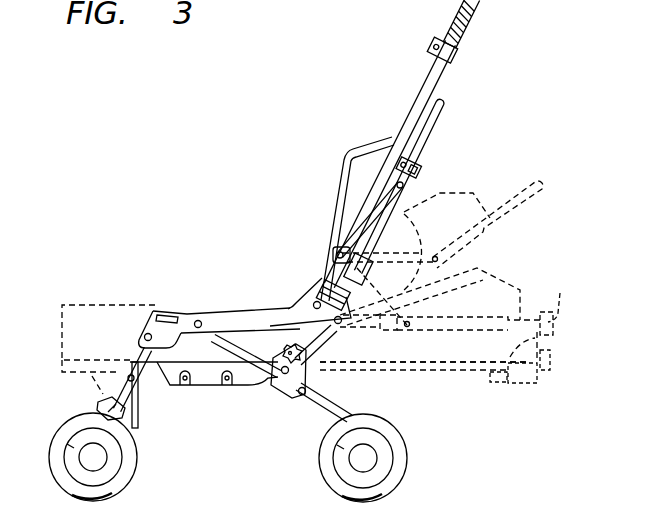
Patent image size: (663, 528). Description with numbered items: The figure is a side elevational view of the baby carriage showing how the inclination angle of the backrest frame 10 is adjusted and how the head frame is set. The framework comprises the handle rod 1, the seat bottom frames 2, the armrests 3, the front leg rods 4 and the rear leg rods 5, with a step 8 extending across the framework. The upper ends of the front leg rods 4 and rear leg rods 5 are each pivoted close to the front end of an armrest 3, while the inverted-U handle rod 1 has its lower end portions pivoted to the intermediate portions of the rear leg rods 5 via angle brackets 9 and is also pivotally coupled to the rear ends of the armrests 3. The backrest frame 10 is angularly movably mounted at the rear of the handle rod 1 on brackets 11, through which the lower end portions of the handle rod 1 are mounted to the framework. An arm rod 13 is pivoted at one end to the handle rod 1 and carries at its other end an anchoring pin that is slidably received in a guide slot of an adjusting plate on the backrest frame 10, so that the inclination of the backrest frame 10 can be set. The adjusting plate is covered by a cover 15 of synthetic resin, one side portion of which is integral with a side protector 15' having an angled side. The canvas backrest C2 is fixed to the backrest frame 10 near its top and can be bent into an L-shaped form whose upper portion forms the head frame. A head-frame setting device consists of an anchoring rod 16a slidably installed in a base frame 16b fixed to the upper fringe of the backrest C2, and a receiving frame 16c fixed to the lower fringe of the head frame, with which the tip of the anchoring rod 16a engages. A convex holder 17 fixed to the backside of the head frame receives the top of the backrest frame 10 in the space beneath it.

The handle rod 1 is at (438, 78).
The seat bottom frame 2 is at (254, 383).
The armrest 3 is at (248, 312).
The front leg rod 4 is at (137, 388).
The rear leg rod 5 is at (317, 402).
The step 8 is at (103, 402).
The angle bracket 9 is at (303, 378).
The backrest frame 10 is at (432, 147).
The bracket 11 is at (331, 326).
The arm rod 13 is at (363, 228).
The cover 15 is at (434, 166).
The side protector 15' is at (357, 198).
The anchoring rod 16a is at (497, 382).
The base frame 16b is at (520, 384).
The receiving frame 16c is at (552, 370).
The holder 17 is at (561, 302).
The backrest C2 is at (411, 371).